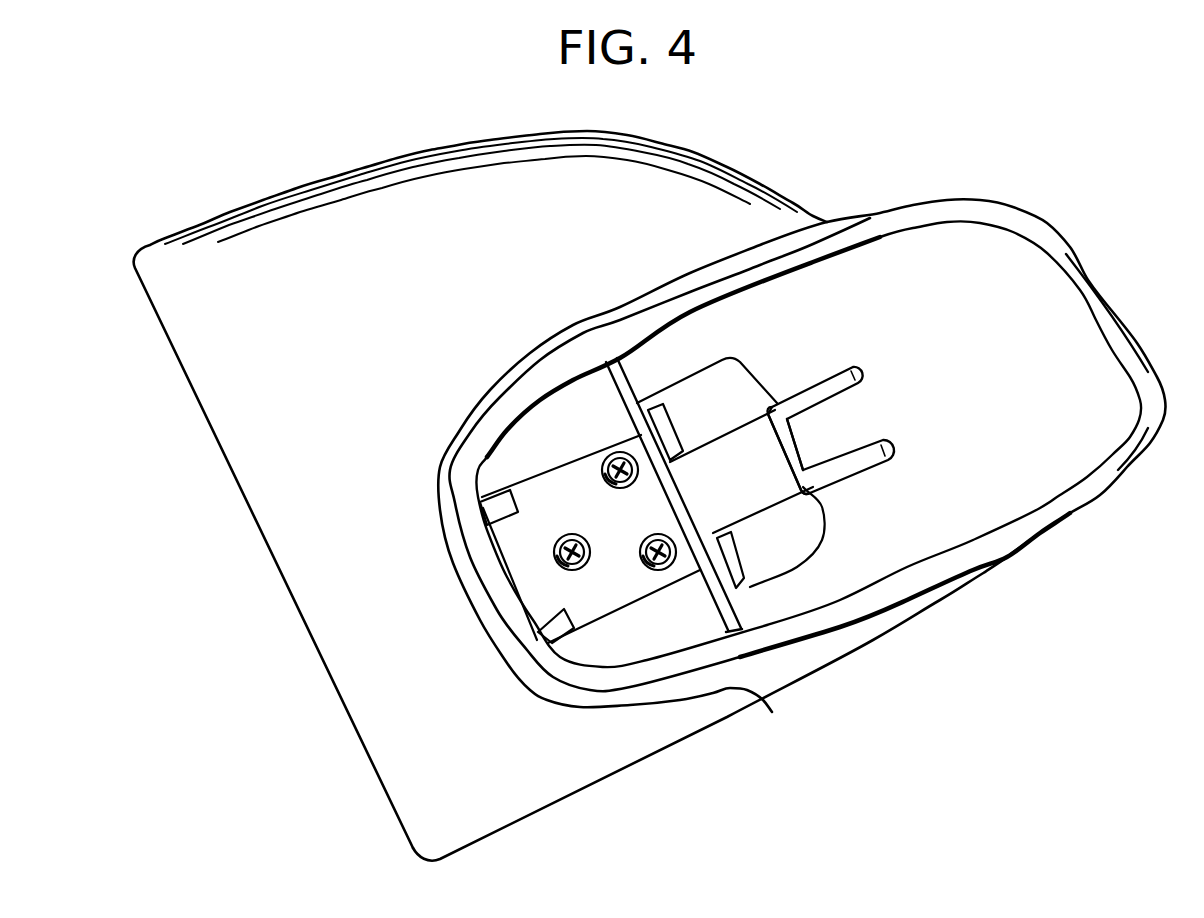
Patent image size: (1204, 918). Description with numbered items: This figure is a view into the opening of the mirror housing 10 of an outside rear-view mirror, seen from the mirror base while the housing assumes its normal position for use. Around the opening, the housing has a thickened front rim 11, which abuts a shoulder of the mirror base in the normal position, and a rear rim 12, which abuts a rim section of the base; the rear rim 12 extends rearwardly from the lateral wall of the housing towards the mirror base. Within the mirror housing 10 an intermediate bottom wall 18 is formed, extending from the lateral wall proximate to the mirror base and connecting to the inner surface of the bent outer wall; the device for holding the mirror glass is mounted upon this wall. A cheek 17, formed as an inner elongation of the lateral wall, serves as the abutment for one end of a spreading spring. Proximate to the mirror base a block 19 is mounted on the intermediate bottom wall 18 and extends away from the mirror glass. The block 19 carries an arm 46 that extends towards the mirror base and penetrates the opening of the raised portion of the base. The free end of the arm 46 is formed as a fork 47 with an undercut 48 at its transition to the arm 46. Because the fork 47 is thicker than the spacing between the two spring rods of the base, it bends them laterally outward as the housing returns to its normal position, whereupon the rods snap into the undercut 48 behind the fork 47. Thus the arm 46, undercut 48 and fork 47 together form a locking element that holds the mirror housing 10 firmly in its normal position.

The mirror housing 10 is at (1102, 503).
The thickened front rim 11 is at (1098, 302).
The rear rim 12 is at (488, 573).
The cheek 17 is at (613, 590).
The intermediate bottom wall 18 is at (724, 604).
The block 19 is at (726, 415).
The arm 46 is at (730, 507).
The fork 47 is at (894, 446).
The undercut 48 is at (783, 456).